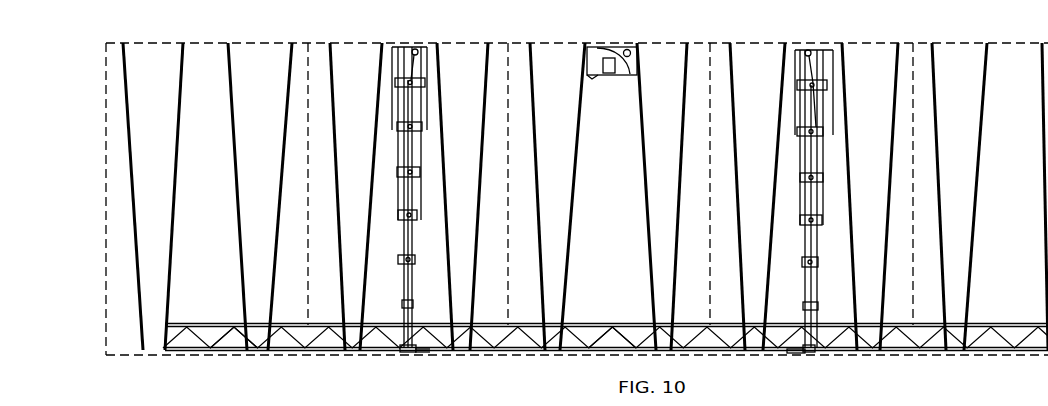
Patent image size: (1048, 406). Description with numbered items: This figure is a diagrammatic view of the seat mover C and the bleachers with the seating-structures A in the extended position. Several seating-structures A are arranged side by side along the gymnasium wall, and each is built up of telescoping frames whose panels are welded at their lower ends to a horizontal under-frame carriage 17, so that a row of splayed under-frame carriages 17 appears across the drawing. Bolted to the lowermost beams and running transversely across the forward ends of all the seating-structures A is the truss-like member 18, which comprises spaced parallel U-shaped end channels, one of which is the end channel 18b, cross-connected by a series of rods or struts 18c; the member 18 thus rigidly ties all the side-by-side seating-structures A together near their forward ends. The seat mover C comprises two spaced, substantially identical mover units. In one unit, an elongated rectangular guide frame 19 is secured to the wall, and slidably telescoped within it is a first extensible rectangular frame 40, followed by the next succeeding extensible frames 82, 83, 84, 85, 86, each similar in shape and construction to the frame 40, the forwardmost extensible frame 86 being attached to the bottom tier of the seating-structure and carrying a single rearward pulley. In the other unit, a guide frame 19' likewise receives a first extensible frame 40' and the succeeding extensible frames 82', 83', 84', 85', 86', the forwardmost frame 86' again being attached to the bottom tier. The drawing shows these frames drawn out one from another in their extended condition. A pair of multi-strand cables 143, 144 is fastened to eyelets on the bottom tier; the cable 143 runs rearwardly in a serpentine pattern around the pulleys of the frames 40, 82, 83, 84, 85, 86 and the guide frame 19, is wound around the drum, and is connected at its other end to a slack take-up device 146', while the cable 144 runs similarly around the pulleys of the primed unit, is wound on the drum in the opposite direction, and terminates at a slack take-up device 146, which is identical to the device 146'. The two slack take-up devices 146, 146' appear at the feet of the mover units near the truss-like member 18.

The under-frame carriage 17 is at (180, 100).
The truss-like member 18 is at (988, 333).
The U-shaped end channel 18b is at (228, 325).
The rods or struts 18c is at (598, 314).
The guide frame 19 is at (380, 64).
The first extensible rectangular frame 40 is at (386, 88).
The extensible frame 82 is at (383, 133).
The extensible frame 83 is at (384, 197).
The extensible frame 84 is at (380, 227).
The extensible frame 85 is at (393, 272).
The forwardmost extensible frame 86 is at (392, 311).
The cable 143 is at (415, 106).
The cable 144 is at (410, 152).
The slack take-up device 146 is at (405, 363).
The guide frame 19' is at (843, 88).
The first extensible rectangular frame 40' is at (837, 92).
The extensible frame 82' is at (841, 137).
The extensible frame 83' is at (839, 199).
The extensible frame 84' is at (842, 249).
The extensible frame 85' is at (827, 293).
The forwardmost extensible frame 86' is at (826, 330).
The slack take-up device 146' is at (784, 368).
The seating-structure A is at (210, 356).
The seat mover C is at (641, 44).